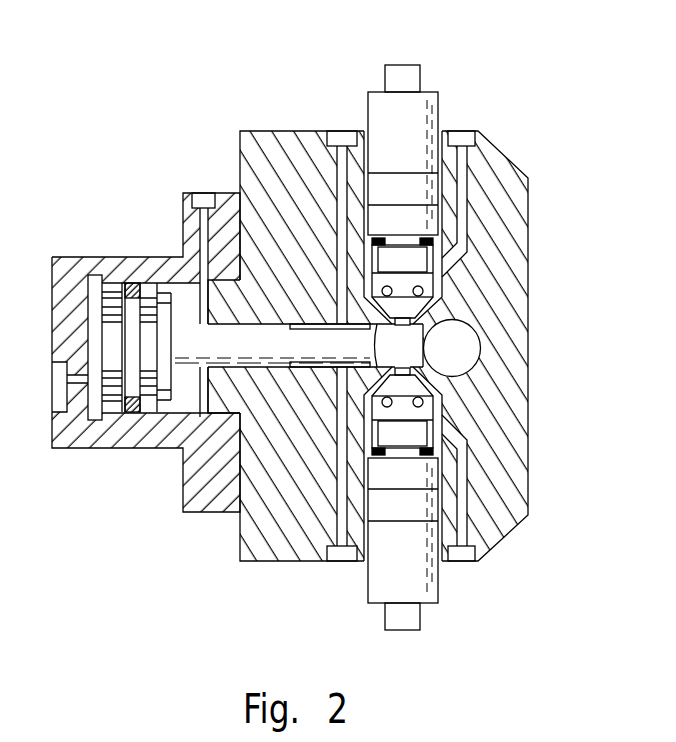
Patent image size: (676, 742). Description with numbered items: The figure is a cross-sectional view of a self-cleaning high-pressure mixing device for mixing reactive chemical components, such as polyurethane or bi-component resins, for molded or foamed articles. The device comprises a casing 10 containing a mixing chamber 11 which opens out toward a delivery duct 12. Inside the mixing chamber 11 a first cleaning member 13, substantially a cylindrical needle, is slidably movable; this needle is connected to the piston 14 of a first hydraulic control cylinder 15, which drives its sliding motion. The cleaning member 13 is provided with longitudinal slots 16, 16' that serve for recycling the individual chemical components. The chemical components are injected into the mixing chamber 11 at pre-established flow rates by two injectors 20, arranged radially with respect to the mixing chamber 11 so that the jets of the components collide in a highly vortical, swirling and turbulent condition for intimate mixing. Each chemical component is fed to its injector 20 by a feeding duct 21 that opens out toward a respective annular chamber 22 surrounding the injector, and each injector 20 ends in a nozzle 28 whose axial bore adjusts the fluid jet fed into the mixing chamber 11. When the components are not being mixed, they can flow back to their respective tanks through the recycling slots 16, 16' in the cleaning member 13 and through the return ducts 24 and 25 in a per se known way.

The casing 10 is at (515, 195).
The mixing chamber 11 is at (407, 338).
The delivery duct 12 is at (468, 348).
The first cleaning member 13 is at (240, 347).
The piston 14 is at (113, 388).
The first hydraulic control cylinder 15 is at (67, 270).
The longitudinal slot 16 is at (259, 485).
The longitudinal slot 16' is at (270, 219).
The injector 20 is at (405, 590).
The feeding duct 21 is at (468, 518).
The annular chamber 22 is at (430, 410).
The return duct 24 is at (342, 178).
The return duct 25 is at (343, 515).
The nozzle 28 is at (407, 385).